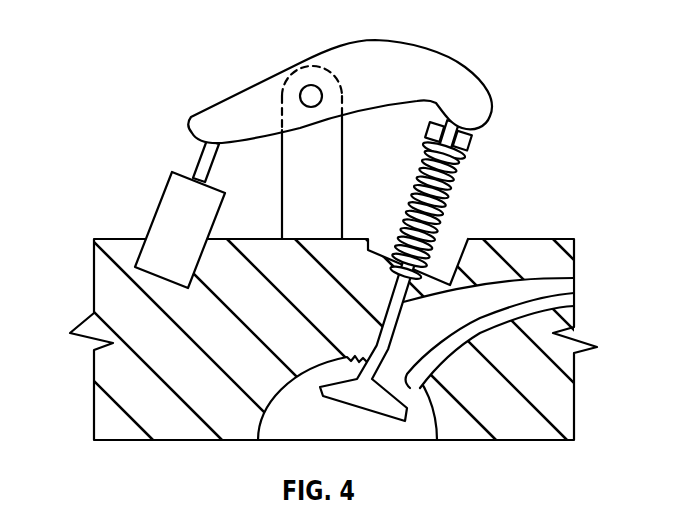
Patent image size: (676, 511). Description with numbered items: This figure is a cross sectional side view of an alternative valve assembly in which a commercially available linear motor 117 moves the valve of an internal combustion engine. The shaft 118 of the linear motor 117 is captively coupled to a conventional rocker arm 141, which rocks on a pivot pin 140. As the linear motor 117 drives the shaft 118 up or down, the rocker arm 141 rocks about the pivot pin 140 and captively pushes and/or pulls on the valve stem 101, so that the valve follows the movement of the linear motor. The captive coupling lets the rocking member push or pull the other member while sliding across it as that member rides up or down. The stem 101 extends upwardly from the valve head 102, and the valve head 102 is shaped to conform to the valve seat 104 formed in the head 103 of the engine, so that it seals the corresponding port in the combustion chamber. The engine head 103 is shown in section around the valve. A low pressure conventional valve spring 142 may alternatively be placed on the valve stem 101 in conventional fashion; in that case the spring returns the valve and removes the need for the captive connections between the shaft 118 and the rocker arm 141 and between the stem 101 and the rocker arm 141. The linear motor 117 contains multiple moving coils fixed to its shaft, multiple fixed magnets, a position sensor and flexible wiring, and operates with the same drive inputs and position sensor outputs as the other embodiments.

The stem 101 is at (386, 284).
The valve head 102 is at (560, 293).
The head 103 is at (173, 378).
The valve seat 104 is at (425, 378).
The linear motor 117 is at (158, 201).
The shaft 118 is at (193, 155).
The pivot pin 140 is at (330, 78).
The rocker arm 141 is at (463, 91).
The valve spring 142 is at (452, 208).